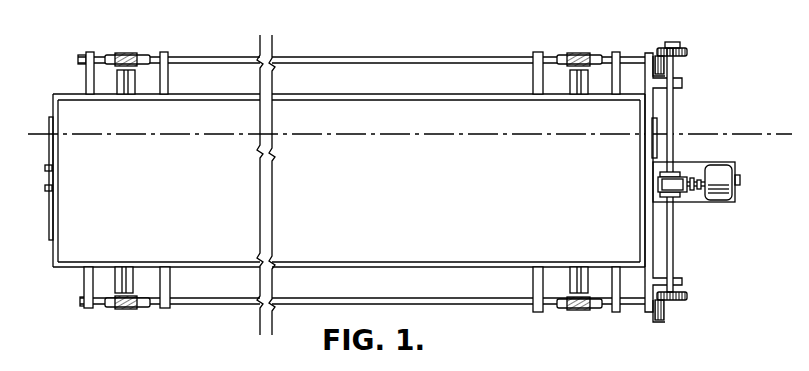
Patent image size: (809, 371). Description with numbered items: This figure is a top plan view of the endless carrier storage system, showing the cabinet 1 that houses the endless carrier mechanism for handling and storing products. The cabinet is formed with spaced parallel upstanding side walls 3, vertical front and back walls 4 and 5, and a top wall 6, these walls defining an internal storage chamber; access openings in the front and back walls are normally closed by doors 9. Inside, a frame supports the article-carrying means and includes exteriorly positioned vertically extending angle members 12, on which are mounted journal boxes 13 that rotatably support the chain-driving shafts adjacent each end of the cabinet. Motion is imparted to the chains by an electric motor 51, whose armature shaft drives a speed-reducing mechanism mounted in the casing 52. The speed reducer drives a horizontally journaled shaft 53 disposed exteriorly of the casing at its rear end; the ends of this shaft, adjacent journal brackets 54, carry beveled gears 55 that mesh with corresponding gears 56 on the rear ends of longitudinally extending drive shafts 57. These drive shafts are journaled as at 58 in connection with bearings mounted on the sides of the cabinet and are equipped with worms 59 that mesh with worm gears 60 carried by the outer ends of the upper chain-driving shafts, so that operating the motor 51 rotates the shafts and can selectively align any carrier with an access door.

The cabinet 1 is at (380, 36).
The side walls 3 is at (483, 97).
The front wall 4 is at (33, 116).
The back wall 5 is at (53, 252).
The top wall 6 is at (368, 248).
The doors 9 is at (50, 190).
The angle members 12 is at (120, 74).
The journal boxes 13 is at (132, 84).
The electric motor 51 is at (727, 183).
The casing 52 is at (682, 196).
The shaft 53 is at (674, 238).
The journal brackets 54 is at (683, 83).
The beveled gears 55 is at (688, 51).
The gears 56 is at (659, 56).
The drive shafts 57 is at (438, 57).
The journals 58 is at (538, 54).
The worms 59 is at (580, 52).
The worm gears 60 is at (118, 52).